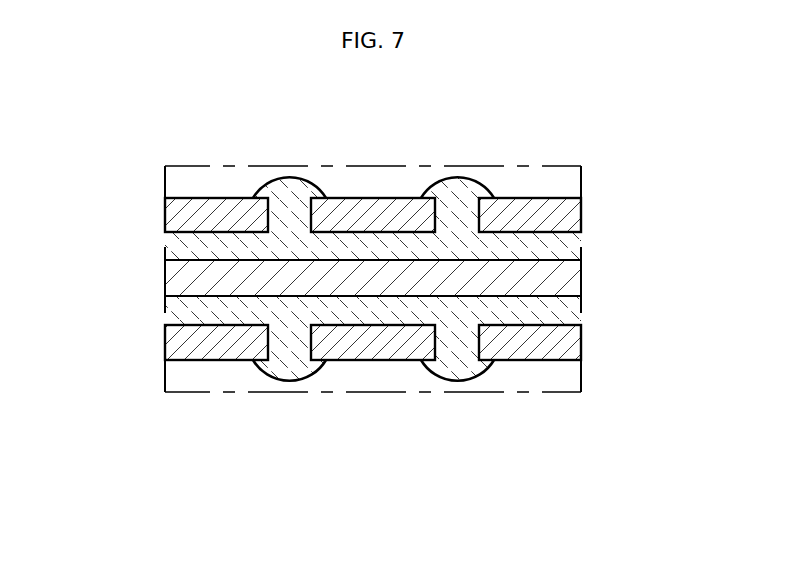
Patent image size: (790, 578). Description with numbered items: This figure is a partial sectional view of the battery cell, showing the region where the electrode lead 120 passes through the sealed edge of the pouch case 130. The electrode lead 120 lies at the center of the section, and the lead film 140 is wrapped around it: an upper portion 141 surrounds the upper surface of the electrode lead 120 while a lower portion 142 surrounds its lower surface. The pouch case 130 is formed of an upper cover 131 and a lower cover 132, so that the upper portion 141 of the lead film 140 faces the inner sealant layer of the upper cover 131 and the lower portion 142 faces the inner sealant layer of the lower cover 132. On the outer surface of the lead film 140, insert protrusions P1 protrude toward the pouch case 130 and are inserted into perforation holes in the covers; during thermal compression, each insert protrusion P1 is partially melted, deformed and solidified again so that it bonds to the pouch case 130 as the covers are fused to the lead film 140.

The electrode lead 120 is at (218, 276).
The pouch case 130 is at (431, 279).
The upper cover 131 is at (582, 212).
The lower cover 132 is at (401, 342).
The lead film 140 is at (314, 279).
The upper portion 141 is at (166, 246).
The lower portion 142 is at (344, 338).
The insert protrusion P1 is at (453, 182).